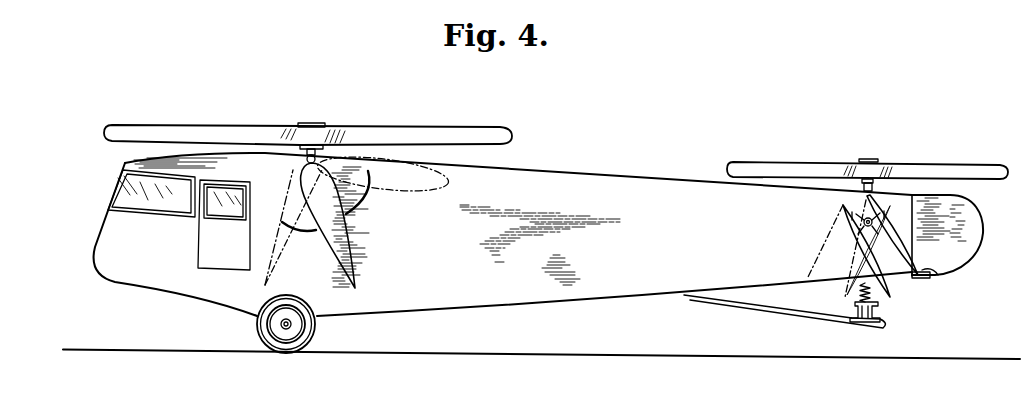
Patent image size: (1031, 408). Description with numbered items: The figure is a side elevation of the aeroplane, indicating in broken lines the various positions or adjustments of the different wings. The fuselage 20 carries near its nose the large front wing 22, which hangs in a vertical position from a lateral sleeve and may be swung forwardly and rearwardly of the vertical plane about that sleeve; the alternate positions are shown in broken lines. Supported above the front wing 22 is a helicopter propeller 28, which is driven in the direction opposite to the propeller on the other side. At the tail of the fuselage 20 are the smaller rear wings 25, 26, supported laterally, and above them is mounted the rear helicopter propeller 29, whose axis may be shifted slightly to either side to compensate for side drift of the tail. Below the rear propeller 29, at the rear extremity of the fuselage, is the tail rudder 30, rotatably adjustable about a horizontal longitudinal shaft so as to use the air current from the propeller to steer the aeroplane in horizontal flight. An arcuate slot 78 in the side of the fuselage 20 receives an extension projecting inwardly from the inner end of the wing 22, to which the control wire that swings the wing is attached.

The fuselage 20 is at (601, 183).
The front wing 22 is at (357, 237).
The rear wing 25 is at (891, 296).
The rear wing 26 is at (931, 276).
The helicopter propeller 28 is at (386, 132).
The rear helicopter propeller 29 is at (837, 166).
The tail rudder 30 is at (965, 244).
The arcuate slot 78 is at (366, 200).